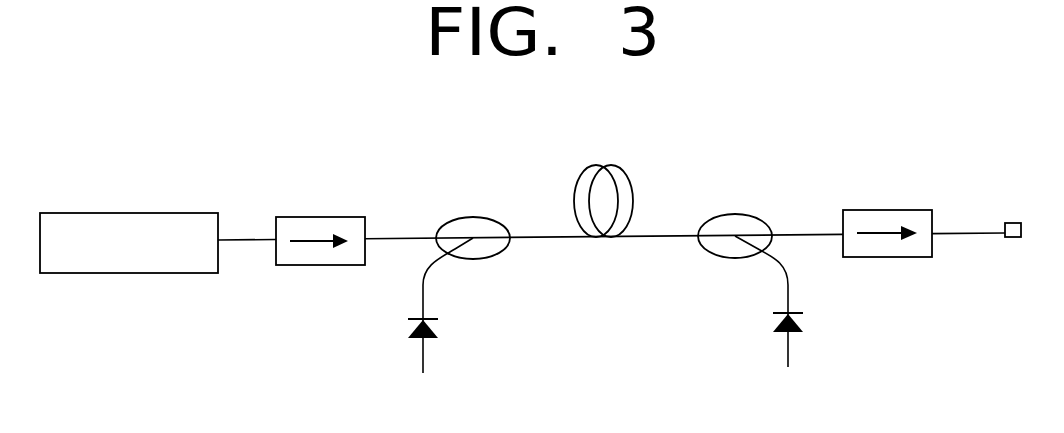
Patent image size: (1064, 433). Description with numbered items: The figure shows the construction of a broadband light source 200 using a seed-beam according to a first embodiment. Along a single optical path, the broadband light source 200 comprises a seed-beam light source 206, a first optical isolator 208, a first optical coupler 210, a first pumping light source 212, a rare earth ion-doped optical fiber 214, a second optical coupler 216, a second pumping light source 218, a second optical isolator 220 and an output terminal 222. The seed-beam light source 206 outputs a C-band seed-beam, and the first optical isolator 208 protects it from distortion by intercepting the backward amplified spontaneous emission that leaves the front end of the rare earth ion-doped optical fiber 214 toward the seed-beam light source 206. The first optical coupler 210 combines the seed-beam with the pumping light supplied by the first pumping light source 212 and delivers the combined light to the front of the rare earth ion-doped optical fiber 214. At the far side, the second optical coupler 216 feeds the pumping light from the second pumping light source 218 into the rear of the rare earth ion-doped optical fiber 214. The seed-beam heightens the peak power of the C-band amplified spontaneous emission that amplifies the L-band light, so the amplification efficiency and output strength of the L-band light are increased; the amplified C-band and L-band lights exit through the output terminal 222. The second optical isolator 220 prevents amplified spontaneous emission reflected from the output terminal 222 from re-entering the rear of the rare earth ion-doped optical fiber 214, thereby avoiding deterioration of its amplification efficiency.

The broadband light source 200 is at (625, 392).
The seed-beam light source 206 is at (125, 212).
The first optical isolator 208 is at (313, 225).
The first optical coupler 210 is at (468, 225).
The first pumping light source 212 is at (397, 329).
The rare earth ion-doped optical fiber 214 is at (608, 165).
The second optical coupler 216 is at (740, 218).
The second pumping light source 218 is at (811, 326).
The second optical isolator 220 is at (883, 216).
The output terminal 222 is at (1015, 238).